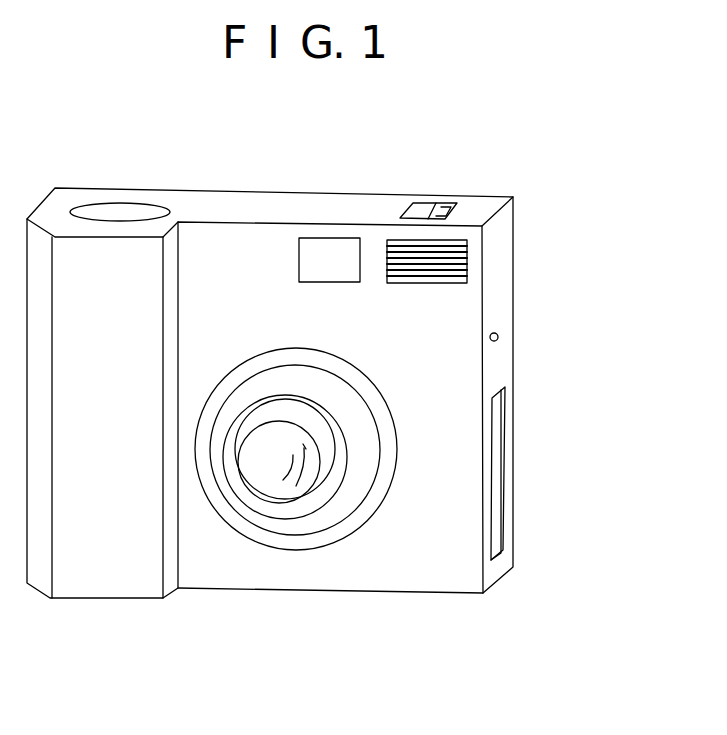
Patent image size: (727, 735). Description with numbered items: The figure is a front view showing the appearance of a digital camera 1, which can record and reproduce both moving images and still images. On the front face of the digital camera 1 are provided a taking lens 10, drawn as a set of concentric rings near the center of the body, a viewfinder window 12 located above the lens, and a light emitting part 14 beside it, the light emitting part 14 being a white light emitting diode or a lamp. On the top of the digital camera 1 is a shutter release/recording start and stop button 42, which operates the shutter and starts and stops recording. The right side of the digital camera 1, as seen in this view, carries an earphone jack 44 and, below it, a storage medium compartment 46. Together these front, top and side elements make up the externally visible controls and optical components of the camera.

The digital camera 1 is at (594, 176).
The taking lens 10 is at (220, 457).
The viewfinder window 12 is at (352, 245).
The light emitting part 14 is at (467, 273).
The shutter release/recording start and stop button 42 is at (117, 213).
The earphone jack 44 is at (499, 338).
The storage medium compartment 46 is at (502, 512).